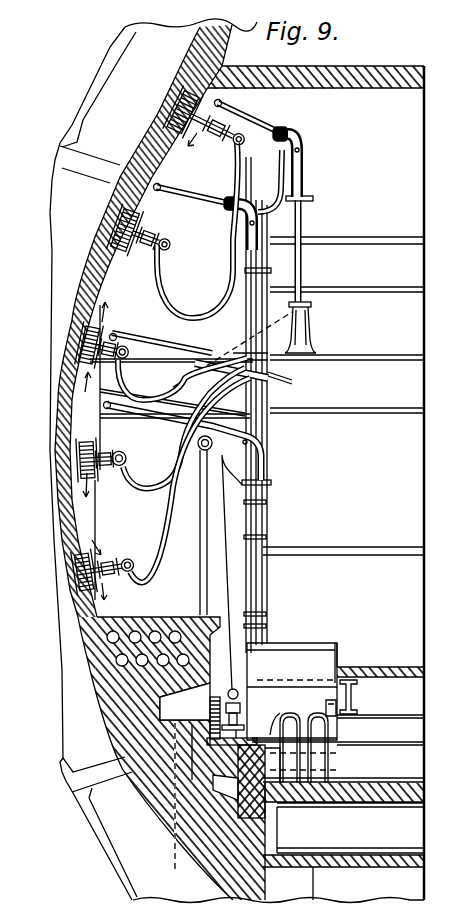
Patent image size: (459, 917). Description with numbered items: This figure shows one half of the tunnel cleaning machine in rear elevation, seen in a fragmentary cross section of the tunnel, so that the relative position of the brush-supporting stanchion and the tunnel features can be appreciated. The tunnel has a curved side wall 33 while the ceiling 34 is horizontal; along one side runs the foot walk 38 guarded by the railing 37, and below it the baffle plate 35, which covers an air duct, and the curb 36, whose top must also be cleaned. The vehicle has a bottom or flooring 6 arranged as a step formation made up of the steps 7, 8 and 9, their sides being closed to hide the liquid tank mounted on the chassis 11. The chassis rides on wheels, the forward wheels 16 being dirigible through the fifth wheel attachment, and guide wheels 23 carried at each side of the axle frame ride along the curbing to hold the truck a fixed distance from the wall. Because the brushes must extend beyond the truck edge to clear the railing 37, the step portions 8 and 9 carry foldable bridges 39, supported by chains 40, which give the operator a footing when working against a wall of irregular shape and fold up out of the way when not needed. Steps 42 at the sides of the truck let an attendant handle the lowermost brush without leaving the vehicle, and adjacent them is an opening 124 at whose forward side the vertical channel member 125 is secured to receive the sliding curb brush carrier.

The bottom or flooring 6 is at (388, 667).
The step 7 is at (354, 548).
The step 8 is at (358, 412).
The step 9 is at (376, 357).
The chassis 11 is at (352, 701).
The wheels 16 is at (325, 752).
The guide wheels 23 is at (275, 765).
The curved side wall 33 is at (97, 277).
The ceiling 34 is at (352, 95).
The baffle plate 35 is at (207, 704).
The curb 36 is at (270, 815).
The railing 37 is at (200, 575).
The foot walk 38 is at (165, 613).
The foldable bridges 39 is at (182, 350).
The chains 40 is at (283, 381).
The steps 42 is at (280, 718).
The opening 124 is at (337, 708).
The vertical channel member 125 is at (271, 690).